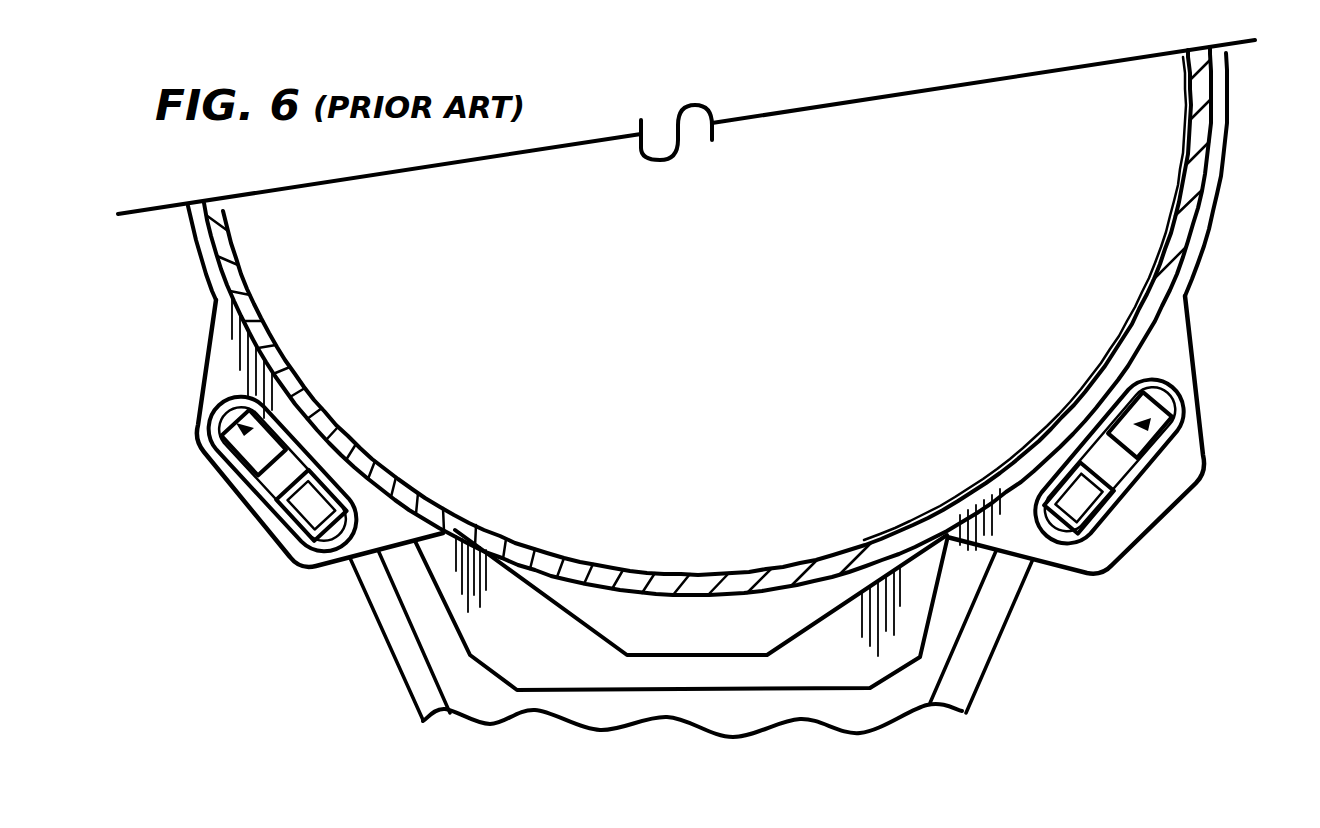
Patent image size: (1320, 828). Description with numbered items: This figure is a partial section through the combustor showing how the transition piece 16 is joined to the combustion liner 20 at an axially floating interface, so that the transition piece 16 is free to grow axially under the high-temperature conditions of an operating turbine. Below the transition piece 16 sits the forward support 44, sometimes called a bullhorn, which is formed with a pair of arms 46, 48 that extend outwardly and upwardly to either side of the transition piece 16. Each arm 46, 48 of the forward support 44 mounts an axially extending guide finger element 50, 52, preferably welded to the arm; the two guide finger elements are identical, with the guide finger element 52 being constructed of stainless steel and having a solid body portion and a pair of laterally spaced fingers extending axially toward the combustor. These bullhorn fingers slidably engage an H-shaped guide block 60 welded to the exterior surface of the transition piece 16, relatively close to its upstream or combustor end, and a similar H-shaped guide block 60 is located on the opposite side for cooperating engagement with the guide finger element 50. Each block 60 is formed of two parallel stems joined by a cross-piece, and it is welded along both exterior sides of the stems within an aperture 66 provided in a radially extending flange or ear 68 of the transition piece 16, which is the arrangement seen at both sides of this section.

The transition piece 16 is at (1194, 247).
The combustion liner 20 is at (1142, 293).
The forward support 44 is at (398, 702).
The arm 46 is at (395, 632).
The arm 48 is at (968, 668).
The guide finger element 50 is at (240, 426).
The guide finger element 52 is at (1152, 426).
The H-shaped guide block 60 is at (265, 485).
The aperture 66 is at (1175, 401).
The flange or ear 68 is at (1162, 367).